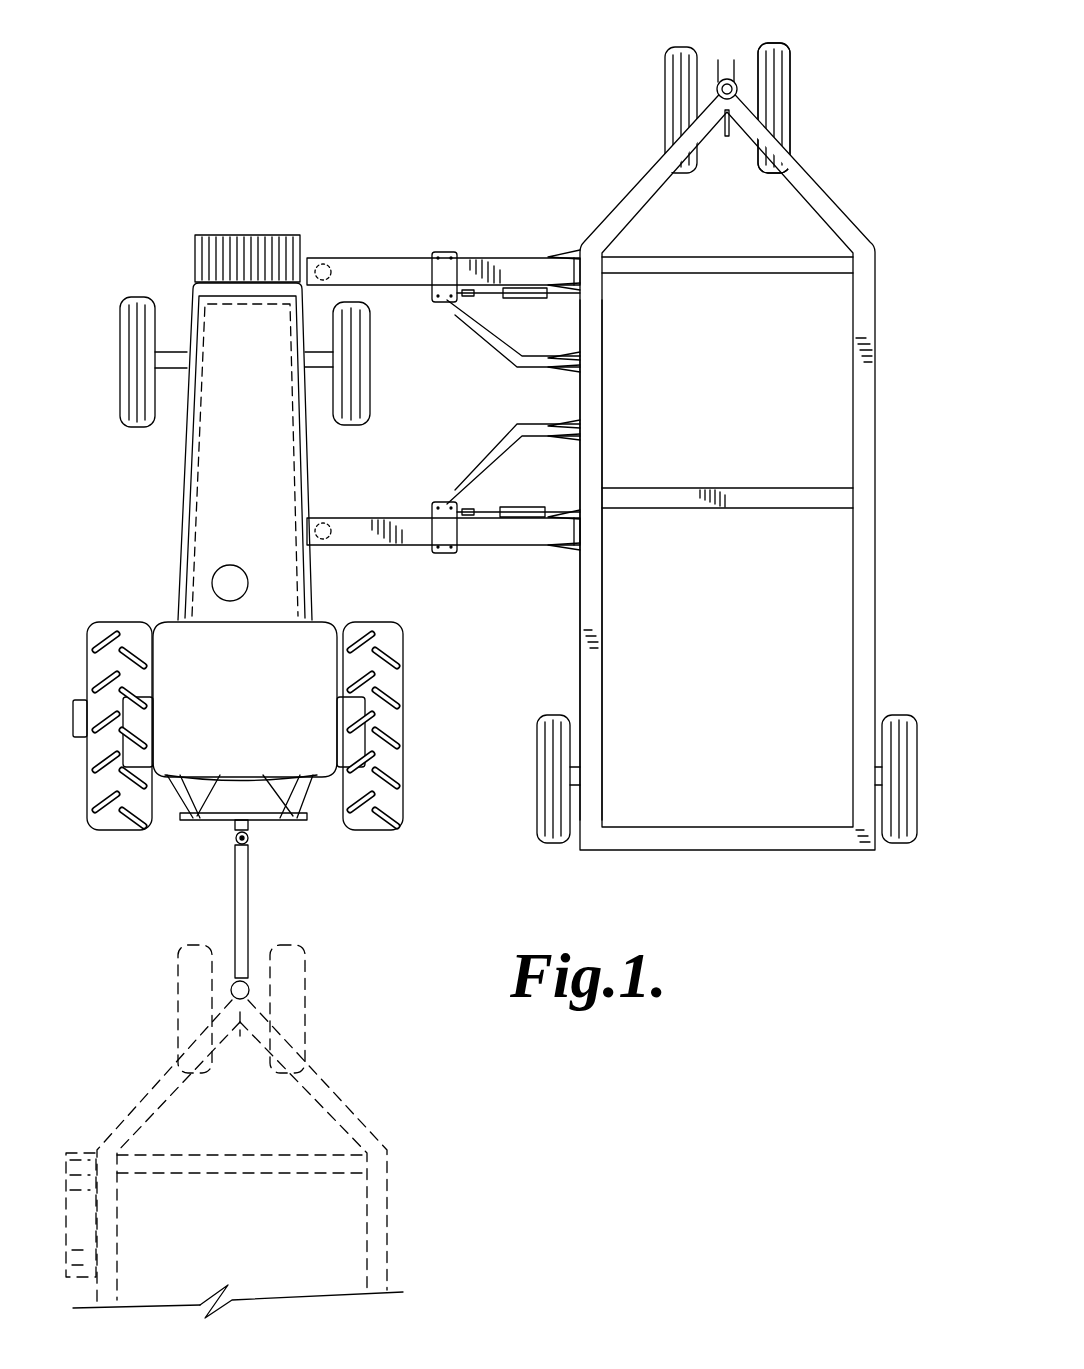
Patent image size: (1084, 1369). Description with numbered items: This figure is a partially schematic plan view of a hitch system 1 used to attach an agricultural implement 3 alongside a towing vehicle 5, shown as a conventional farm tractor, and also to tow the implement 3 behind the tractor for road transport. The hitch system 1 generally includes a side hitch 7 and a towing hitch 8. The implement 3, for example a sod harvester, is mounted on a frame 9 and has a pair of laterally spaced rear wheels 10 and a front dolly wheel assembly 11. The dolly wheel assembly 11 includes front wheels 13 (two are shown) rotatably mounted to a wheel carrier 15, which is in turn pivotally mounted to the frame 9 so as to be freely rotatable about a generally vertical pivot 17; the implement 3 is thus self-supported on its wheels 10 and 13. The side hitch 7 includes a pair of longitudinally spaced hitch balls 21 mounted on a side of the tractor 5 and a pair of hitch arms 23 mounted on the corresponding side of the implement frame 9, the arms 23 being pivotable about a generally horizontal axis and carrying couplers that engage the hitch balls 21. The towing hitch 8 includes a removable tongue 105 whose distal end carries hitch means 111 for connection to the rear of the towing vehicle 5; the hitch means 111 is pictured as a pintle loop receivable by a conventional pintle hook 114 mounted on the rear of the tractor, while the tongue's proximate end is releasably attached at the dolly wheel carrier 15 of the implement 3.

The hitch system 1 is at (472, 170).
The agricultural implement 3 is at (813, 170).
The towing vehicle 5 is at (178, 530).
The side hitch 7 is at (400, 288).
The towing hitch 8 is at (186, 843).
The frame 9 is at (603, 390).
The rear wheels 10 is at (553, 713).
The front dolly wheel assembly 11 is at (788, 46).
The front wheel 13 is at (662, 78).
The wheel carrier 15 is at (713, 95).
The vertical pivot 17 is at (715, 102).
The hitch balls 21 is at (320, 262).
The hitch arms 23 is at (360, 258).
The removable tongue 105 is at (250, 900).
The hitch means 111 is at (258, 842).
The pintle hook 114 is at (240, 822).